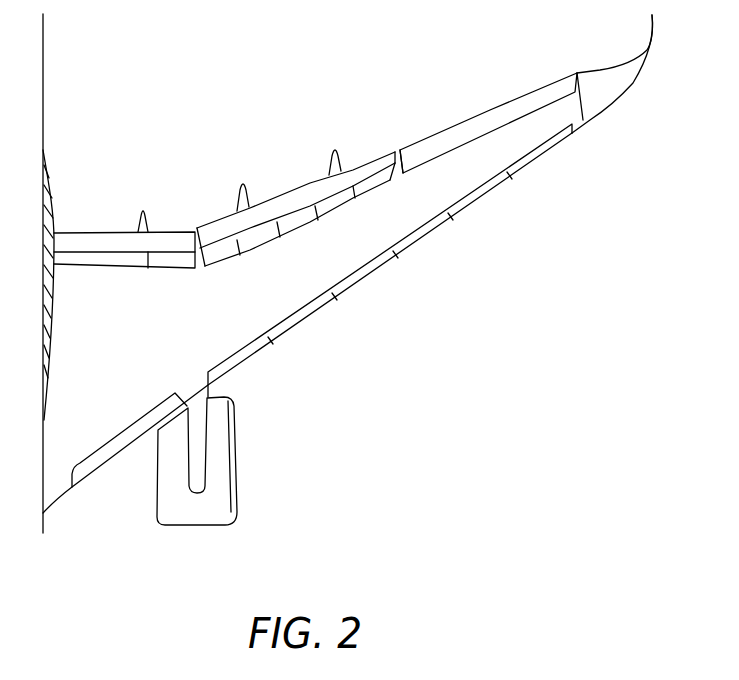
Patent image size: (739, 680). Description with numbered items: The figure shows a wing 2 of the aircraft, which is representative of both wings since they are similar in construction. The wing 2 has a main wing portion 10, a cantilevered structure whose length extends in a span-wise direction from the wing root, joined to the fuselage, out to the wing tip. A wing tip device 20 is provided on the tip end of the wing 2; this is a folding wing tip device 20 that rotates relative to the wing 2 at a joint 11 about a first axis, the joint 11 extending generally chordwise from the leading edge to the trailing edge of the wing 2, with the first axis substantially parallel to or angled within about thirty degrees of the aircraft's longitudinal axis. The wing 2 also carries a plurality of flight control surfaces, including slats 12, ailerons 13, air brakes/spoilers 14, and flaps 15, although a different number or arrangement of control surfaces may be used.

The wing 2 is at (371, 273).
The main wing portion 10 is at (348, 242).
The joint 11 is at (583, 110).
The slats 12 is at (498, 367).
The ailerons 13 is at (503, 113).
The air brakes/spoilers 14 is at (373, 183).
The flaps 15 is at (293, 198).
The wing tip device 20 is at (623, 73).